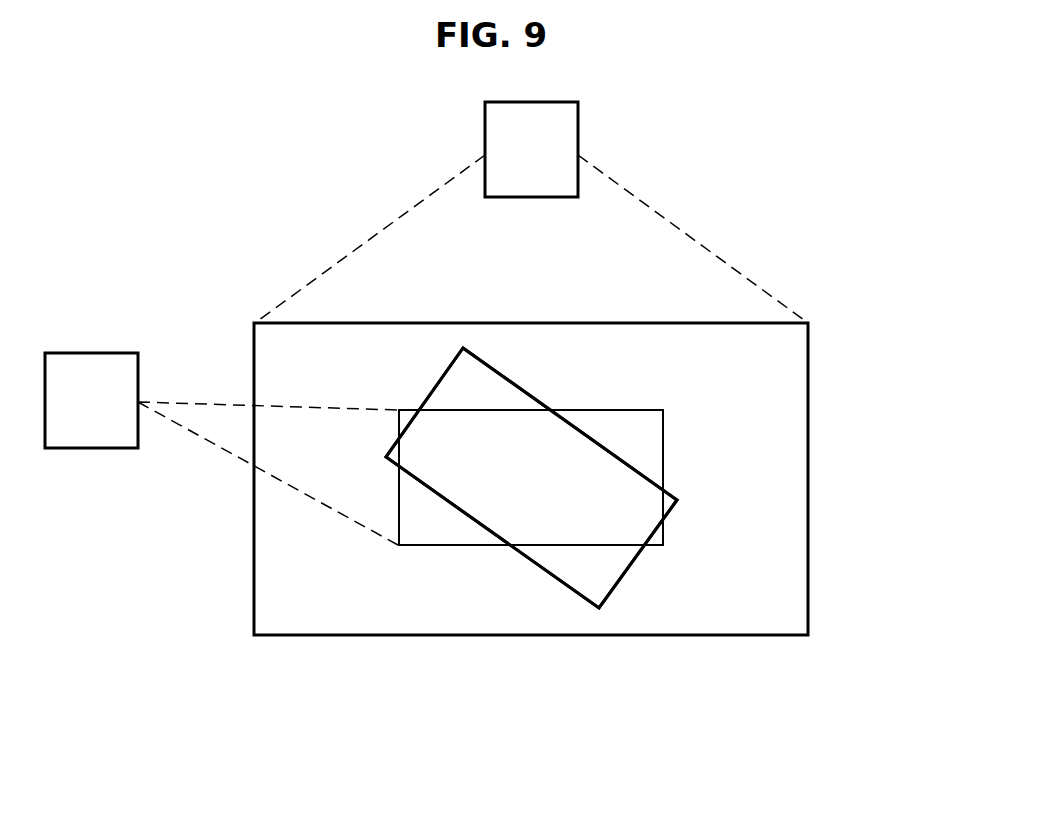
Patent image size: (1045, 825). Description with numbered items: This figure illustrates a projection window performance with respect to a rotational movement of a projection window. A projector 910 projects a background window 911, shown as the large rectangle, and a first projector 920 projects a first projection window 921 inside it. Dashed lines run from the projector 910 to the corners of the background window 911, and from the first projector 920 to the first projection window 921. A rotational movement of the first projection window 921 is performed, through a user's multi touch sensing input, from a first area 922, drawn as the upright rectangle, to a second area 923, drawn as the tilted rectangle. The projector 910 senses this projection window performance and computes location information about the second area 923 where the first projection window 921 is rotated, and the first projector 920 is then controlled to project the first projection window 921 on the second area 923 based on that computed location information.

The projector 910 is at (531, 212).
The background window 911 is at (531, 479).
The first projector 920 is at (221, 449).
The first projection window 921 is at (531, 478).
The first area 922 is at (663, 437).
The second area 923 is at (557, 578).